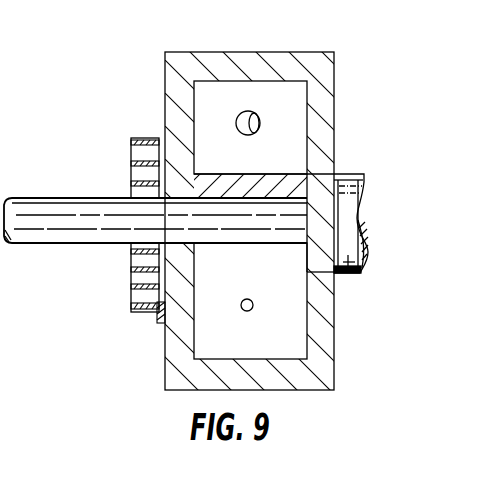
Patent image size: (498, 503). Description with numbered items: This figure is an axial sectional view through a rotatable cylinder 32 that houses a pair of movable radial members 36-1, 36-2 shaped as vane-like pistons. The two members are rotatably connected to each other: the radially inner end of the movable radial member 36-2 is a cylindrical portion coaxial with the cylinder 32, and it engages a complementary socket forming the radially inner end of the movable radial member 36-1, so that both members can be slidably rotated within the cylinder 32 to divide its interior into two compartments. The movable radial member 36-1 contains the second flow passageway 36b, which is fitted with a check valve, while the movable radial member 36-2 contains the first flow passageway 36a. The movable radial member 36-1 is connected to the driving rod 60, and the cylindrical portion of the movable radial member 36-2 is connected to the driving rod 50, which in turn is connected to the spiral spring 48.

The rotatable cylinder 32 is at (333, 105).
The movable radial member 36-1 is at (289, 87).
The movable radial member 36-2 is at (205, 318).
The first flow passageway 36a is at (252, 302).
The second flow passageway 36b is at (258, 131).
The spiral spring 48 is at (143, 277).
The driving rod 50 is at (110, 230).
The driving rod 60 is at (343, 276).